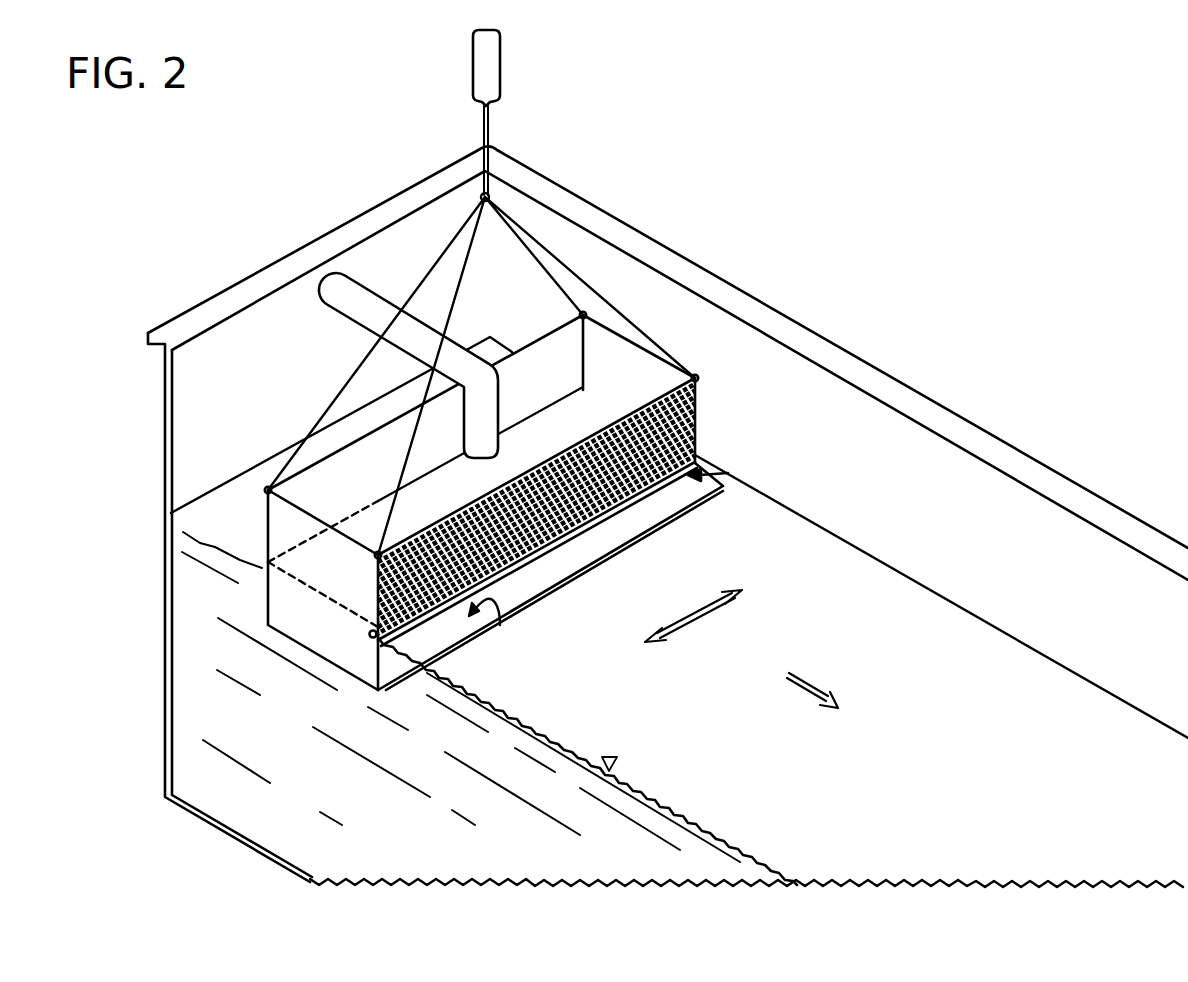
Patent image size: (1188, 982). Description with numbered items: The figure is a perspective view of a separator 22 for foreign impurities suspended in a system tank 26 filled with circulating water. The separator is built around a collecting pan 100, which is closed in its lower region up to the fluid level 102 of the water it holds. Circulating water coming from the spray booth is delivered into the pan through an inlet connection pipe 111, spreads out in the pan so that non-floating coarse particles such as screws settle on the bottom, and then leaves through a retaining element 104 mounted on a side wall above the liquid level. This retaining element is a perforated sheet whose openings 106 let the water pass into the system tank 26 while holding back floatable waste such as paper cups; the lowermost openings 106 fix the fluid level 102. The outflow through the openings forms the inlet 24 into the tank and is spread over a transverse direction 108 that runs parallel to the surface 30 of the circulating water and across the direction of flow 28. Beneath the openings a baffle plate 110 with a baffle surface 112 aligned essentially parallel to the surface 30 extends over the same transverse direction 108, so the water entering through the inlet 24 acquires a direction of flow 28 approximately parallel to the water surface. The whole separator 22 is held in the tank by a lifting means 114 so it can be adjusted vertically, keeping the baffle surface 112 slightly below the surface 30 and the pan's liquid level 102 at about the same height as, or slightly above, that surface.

The separator for foreign impurities 22 is at (704, 149).
The inlet 24 is at (730, 473).
The system tank 26 is at (414, 845).
The direction of flow 28 is at (812, 690).
The surface of the circulating water 30 is at (713, 835).
The collecting pan 100 is at (358, 664).
The fluid level 102 is at (313, 588).
The retaining element 104 is at (697, 408).
The openings 106 is at (694, 447).
The transverse direction 108 is at (698, 613).
The baffle plate 110 is at (496, 622).
The inlet connection pipe 111 is at (492, 415).
The baffle surface 112 is at (608, 538).
The lifting means 114 is at (478, 78).